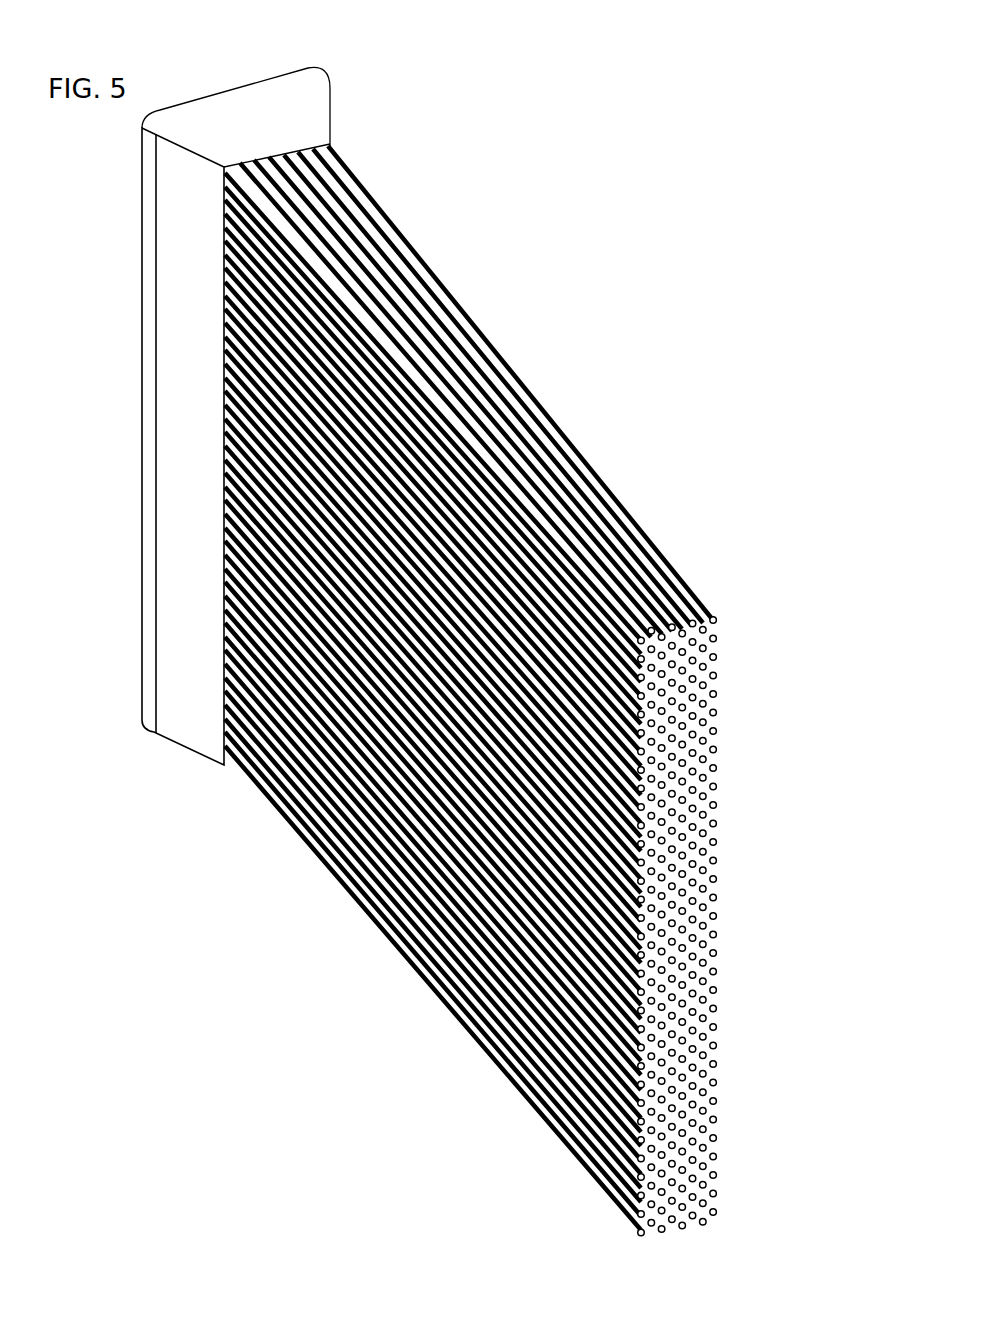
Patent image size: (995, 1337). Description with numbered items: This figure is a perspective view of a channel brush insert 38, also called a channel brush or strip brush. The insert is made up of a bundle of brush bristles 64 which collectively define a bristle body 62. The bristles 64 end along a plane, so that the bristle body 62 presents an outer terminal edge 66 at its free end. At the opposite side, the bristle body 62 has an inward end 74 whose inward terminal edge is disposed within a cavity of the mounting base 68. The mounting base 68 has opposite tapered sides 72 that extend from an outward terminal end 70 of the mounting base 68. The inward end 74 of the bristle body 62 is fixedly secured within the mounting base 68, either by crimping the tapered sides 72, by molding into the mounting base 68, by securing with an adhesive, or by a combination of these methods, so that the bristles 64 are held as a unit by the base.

The channel brush insert 38 is at (485, 295).
The bristle body 62 is at (572, 455).
The brush bristles 64 is at (650, 535).
The outer terminal edge 66 is at (703, 872).
The mounting base 68 is at (173, 417).
The outward terminal end 70 is at (283, 82).
The tapered sides 72 is at (183, 232).
The inward end 74 is at (313, 142).